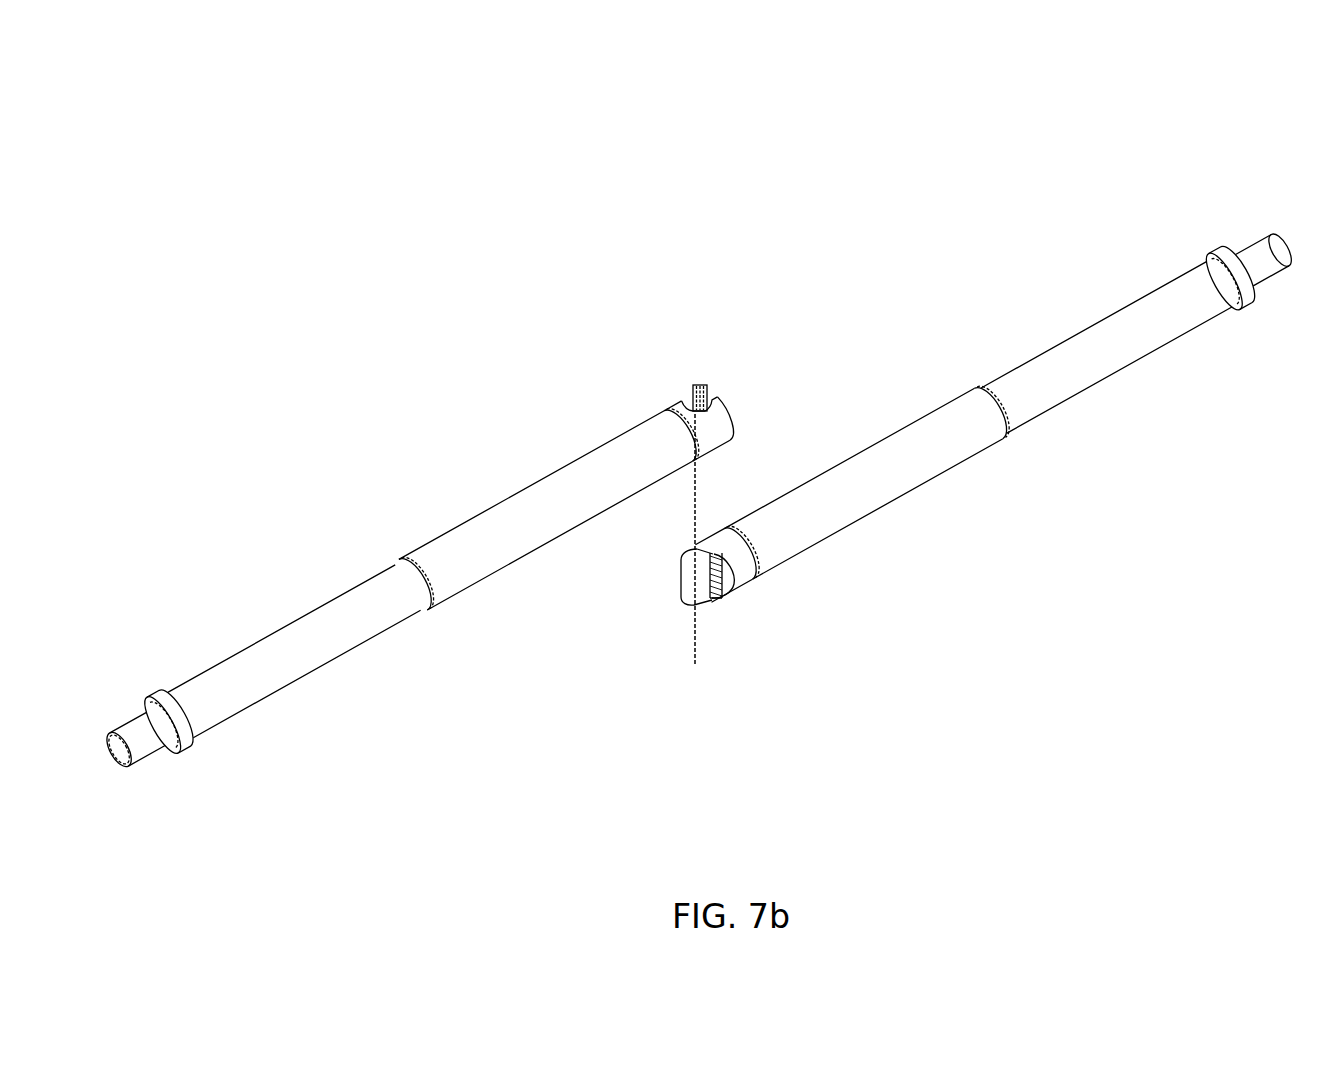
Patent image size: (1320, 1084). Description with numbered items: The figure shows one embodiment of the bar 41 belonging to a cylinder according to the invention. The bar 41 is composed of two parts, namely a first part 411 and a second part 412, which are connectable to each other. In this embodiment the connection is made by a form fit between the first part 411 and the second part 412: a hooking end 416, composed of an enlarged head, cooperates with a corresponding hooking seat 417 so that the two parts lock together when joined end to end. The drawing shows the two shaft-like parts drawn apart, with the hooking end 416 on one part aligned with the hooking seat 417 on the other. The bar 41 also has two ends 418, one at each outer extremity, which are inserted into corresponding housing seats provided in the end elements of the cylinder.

The bar 41 is at (696, 438).
The first part 411 is at (517, 525).
The second part 412 is at (887, 458).
The hooking end 416 is at (695, 600).
The hooking seat 417 is at (697, 387).
The ends 418 is at (123, 730).